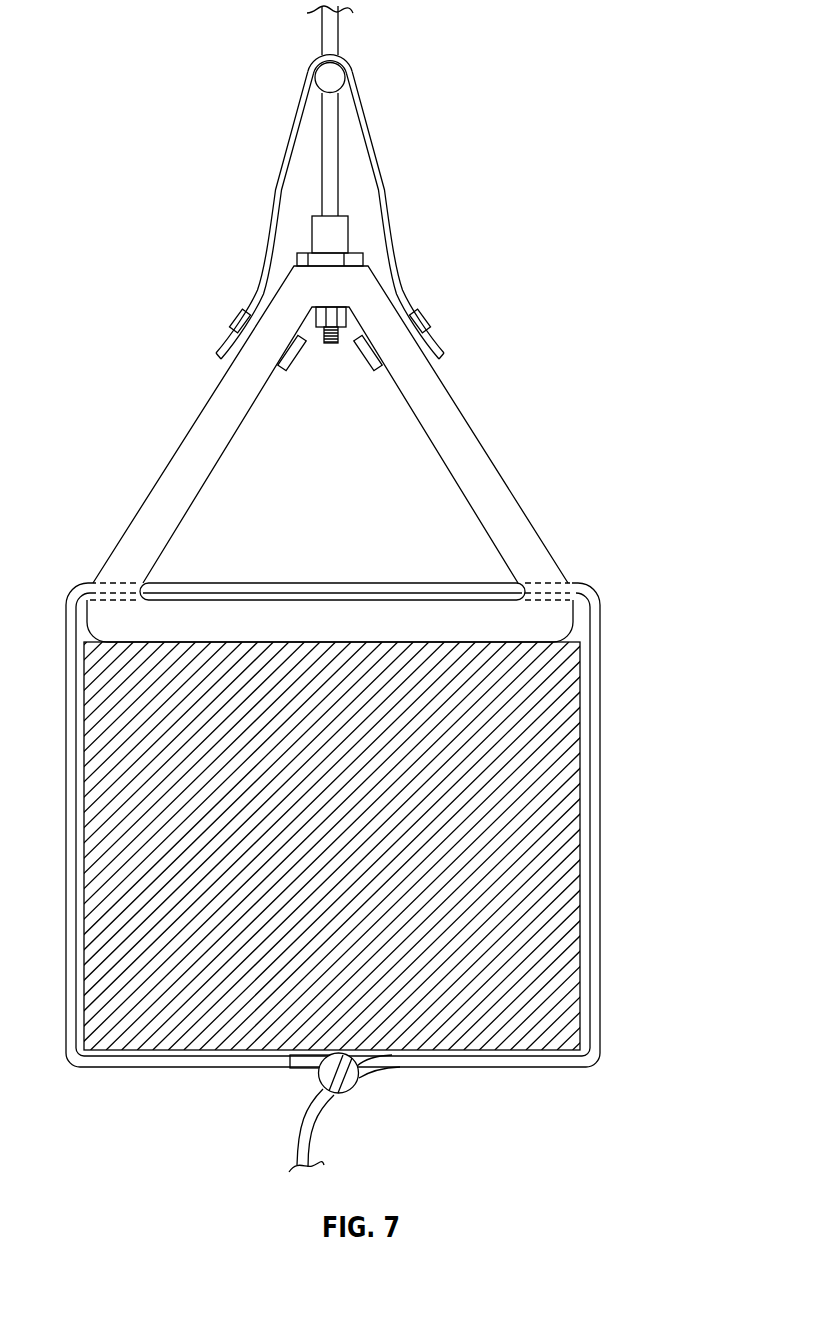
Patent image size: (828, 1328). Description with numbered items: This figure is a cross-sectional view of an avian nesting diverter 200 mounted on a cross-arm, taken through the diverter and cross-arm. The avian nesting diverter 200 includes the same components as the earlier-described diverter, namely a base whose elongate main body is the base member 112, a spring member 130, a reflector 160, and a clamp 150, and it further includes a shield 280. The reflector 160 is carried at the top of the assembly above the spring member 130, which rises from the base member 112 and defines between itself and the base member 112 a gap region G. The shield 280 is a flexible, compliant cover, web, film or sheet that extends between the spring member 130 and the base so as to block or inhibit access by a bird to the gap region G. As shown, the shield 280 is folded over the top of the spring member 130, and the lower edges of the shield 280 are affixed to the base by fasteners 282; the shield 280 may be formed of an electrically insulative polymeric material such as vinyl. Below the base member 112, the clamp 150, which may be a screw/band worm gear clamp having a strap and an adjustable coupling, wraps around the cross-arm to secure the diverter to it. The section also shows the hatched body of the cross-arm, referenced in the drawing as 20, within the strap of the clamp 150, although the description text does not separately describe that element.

The avian nesting diverter 200 is at (522, 203).
The reflector 160 is at (333, 40).
The spring member 130 is at (330, 152).
The shield 280 is at (381, 184).
The gap region G is at (308, 189).
The fasteners 282 is at (234, 316).
The base member 112 is at (492, 478).
The clamp 150 is at (610, 684).
The panel 20 is at (570, 728).